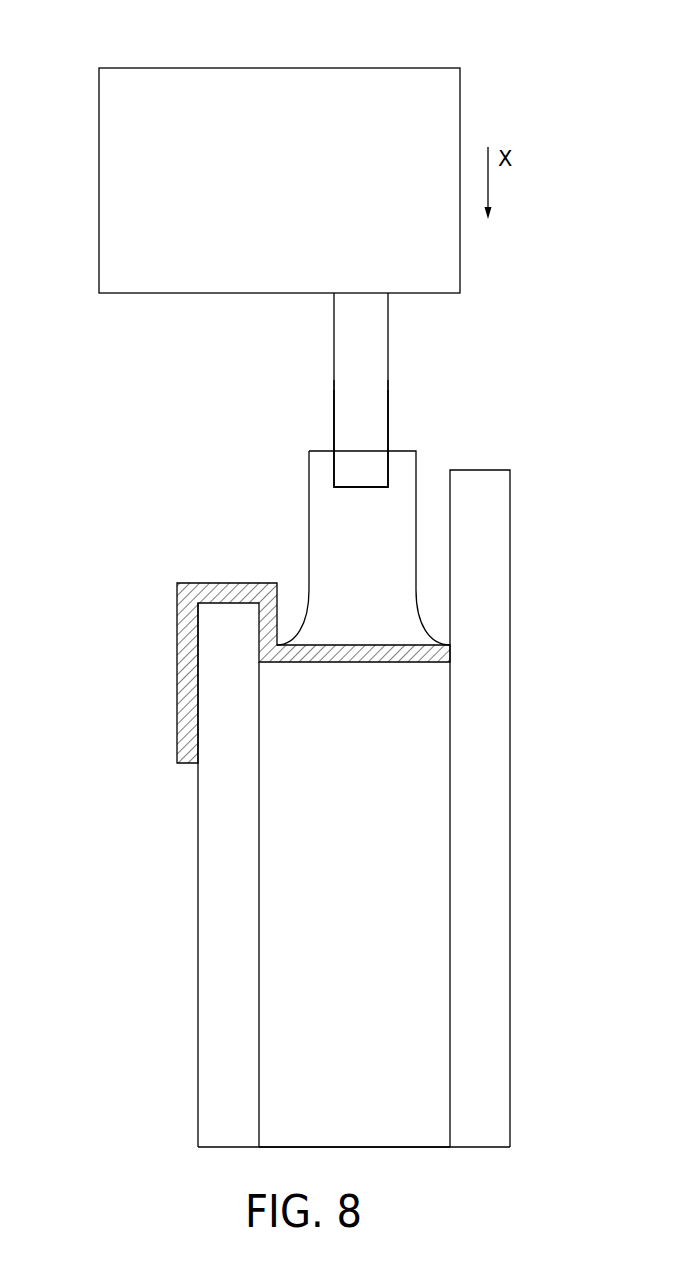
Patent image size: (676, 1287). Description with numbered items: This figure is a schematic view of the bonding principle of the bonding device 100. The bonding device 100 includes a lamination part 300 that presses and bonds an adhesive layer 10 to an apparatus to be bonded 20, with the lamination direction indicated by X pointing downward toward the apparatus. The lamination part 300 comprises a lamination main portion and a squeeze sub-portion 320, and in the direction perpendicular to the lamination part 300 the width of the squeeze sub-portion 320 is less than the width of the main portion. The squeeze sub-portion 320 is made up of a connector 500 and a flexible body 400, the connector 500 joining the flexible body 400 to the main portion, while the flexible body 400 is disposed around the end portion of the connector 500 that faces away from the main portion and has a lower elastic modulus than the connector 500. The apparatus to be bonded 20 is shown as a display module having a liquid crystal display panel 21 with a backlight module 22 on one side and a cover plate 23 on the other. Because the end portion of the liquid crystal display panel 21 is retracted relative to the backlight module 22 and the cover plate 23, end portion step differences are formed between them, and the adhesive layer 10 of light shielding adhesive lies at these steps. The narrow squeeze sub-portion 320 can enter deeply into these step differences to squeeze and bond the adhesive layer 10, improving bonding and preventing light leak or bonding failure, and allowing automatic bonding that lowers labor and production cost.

The bonding device 100 is at (96, 36).
The lamination part 300 is at (376, 342).
The connector 500 is at (376, 407).
The squeeze sub-portion 320 is at (457, 377).
The flexible body 400 is at (399, 497).
The apparatus to be bonded 20 is at (335, 805).
The adhesive layer 10 is at (177, 640).
The backlight module 22 is at (198, 855).
The cover plate 23 is at (511, 833).
The liquid crystal display panel 21 is at (450, 960).